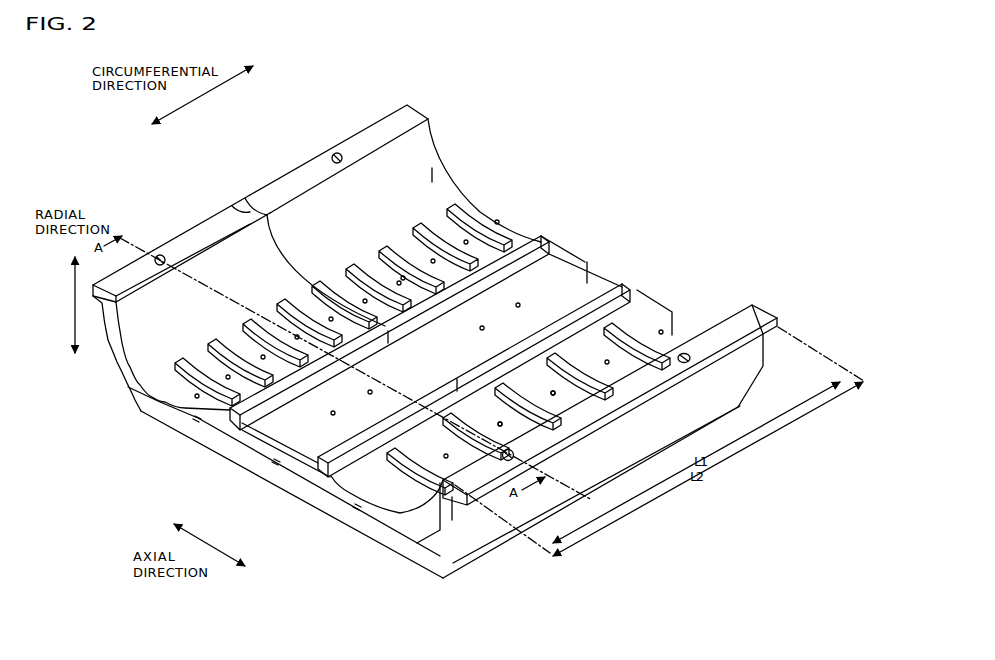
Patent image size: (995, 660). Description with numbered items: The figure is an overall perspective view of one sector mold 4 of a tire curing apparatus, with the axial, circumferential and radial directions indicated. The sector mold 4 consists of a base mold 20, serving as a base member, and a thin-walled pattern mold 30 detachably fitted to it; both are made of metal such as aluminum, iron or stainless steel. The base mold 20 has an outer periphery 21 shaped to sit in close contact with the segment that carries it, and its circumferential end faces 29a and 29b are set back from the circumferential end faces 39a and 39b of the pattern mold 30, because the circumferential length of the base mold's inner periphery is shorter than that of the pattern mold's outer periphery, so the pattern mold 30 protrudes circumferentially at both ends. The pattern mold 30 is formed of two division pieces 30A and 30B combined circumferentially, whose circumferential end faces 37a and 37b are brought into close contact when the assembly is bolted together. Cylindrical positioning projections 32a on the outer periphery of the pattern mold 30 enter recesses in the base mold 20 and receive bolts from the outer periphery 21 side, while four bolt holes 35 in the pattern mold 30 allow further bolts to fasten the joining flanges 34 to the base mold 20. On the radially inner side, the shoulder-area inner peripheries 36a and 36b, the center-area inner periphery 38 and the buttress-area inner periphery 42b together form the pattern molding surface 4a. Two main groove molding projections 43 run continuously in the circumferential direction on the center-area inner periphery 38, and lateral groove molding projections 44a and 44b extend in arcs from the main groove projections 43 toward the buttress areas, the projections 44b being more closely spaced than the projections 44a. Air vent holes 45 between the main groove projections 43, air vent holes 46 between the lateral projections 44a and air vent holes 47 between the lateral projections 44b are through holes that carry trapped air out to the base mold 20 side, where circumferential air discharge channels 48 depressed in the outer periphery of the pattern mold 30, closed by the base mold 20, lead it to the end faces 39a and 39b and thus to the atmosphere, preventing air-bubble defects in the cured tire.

The sector mold 4 is at (590, 168).
The pattern molding surface 4a is at (360, 475).
The base mold 20 is at (484, 543).
The outer periphery 21 is at (460, 570).
The circumferential end face 29a is at (247, 456).
The circumferential end face 29b is at (764, 355).
The pattern mold 30 is at (260, 203).
The division piece 30A is at (189, 222).
The division piece 30B is at (262, 182).
The positioning projection 32a is at (390, 528).
The joining flange 34 is at (447, 284).
The bolt hole 35 is at (336, 153).
The shoulder-area inner periphery 36a is at (673, 315).
The shoulder-area inner periphery 36b is at (487, 218).
The circumferential end face 37a is at (245, 193).
The circumferential end face 37b is at (232, 206).
The center-area inner periphery 38 is at (588, 278).
The circumferential end face 39a is at (170, 401).
The circumferential end face 39b is at (651, 300).
The buttress-area inner periphery 42b is at (436, 168).
The main groove molding projection 43 is at (543, 236).
The lateral groove molding projection 44a is at (570, 372).
The lateral groove molding projection 44b is at (386, 250).
The air vent hole 45 is at (520, 308).
The air vent hole 46 is at (502, 421).
The air vent hole 47 is at (411, 291).
The air discharge channel 48 is at (198, 422).